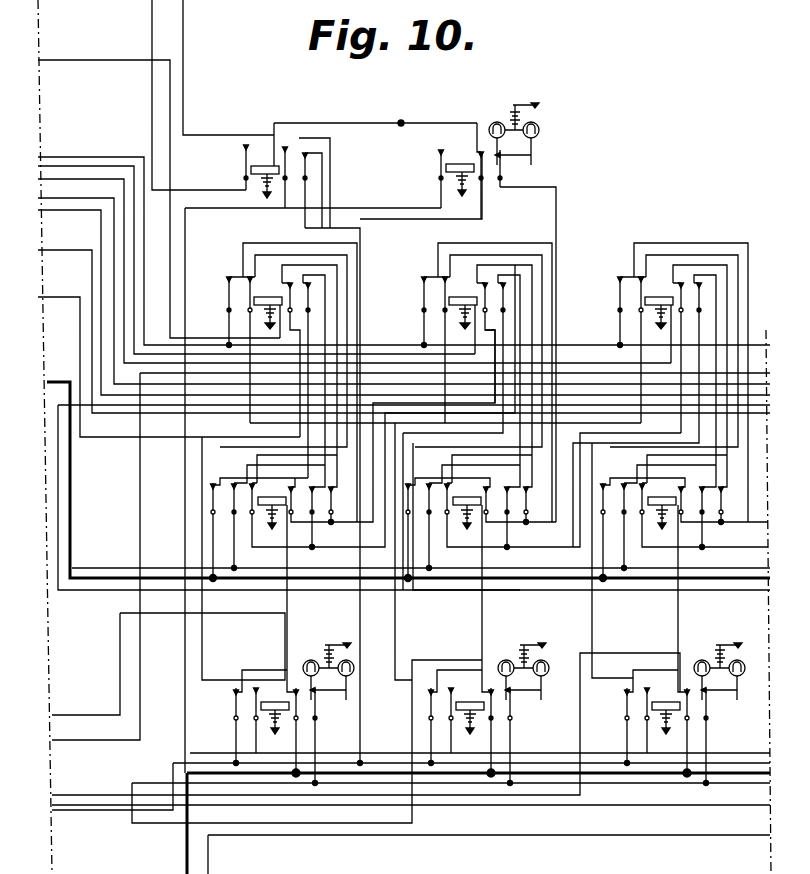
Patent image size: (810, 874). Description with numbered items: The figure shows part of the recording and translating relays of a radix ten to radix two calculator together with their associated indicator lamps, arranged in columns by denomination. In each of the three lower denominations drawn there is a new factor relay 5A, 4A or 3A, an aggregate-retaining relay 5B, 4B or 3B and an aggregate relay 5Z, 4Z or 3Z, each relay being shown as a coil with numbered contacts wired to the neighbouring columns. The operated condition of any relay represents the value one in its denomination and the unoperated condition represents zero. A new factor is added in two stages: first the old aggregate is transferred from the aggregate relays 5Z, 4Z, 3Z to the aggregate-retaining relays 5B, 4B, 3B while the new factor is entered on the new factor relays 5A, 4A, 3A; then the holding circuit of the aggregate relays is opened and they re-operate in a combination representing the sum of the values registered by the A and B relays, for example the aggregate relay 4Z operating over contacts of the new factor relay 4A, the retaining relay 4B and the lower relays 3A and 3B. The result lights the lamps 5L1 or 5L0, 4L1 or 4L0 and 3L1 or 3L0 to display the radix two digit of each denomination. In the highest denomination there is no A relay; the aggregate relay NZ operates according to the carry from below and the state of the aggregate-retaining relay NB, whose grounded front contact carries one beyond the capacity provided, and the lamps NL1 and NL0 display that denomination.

The aggregate-retaining relay NB is at (264, 166).
The aggregate relay NZ is at (460, 164).
The lamp NL1 is at (506, 135).
The lamp NL0 is at (536, 134).
The new factor relay 5A is at (267, 297).
The new factor relay 4A is at (462, 297).
The new factor relay 3A is at (658, 297).
The aggregate-retaining relay 5B is at (271, 497).
The aggregate-retaining relay 4B is at (466, 497).
The aggregate-retaining relay 3B is at (661, 497).
The aggregate relay 5Z is at (280, 710).
The aggregate relay 4Z is at (475, 710).
The aggregate relay 3Z is at (671, 710).
The lamp 5L1 is at (319, 671).
The lamp 5L0 is at (345, 671).
The lamp 4L1 is at (514, 671).
The lamp 4L0 is at (540, 671).
The lamp 3L1 is at (710, 671).
The lamp 3L0 is at (736, 671).